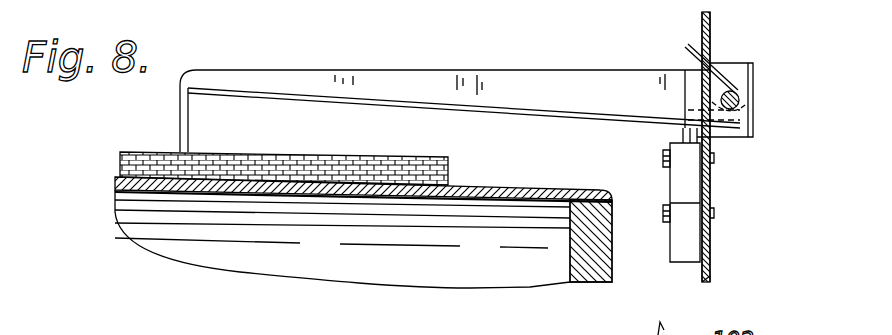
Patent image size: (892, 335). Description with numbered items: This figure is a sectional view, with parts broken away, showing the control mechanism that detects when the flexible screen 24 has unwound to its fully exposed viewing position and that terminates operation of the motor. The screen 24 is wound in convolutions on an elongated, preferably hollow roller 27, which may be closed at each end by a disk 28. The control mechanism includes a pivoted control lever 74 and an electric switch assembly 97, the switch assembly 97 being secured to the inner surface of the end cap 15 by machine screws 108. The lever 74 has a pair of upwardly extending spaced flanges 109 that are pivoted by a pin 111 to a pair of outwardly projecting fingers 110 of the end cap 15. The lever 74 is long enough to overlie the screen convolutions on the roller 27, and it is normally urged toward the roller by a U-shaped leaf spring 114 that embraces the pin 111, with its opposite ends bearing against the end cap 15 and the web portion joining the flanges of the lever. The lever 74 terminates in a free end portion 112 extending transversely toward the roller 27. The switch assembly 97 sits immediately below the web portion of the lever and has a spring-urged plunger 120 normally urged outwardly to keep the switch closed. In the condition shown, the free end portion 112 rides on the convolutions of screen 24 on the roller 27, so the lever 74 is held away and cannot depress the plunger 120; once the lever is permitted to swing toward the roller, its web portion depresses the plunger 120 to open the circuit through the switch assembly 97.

The end cap 15 is at (712, 40).
The flexible screen 24 is at (270, 162).
The roller 27 is at (503, 190).
The disk 28 is at (576, 247).
The control lever 74 is at (476, 108).
The electric switch assembly 97 is at (680, 240).
The machine screws 108 is at (714, 215).
The flanges 109 is at (491, 82).
The fingers 110 is at (733, 63).
The pin 111 is at (740, 100).
The free end portion 112 is at (180, 122).
The leaf spring 114 is at (686, 60).
The plunger 120 is at (682, 134).